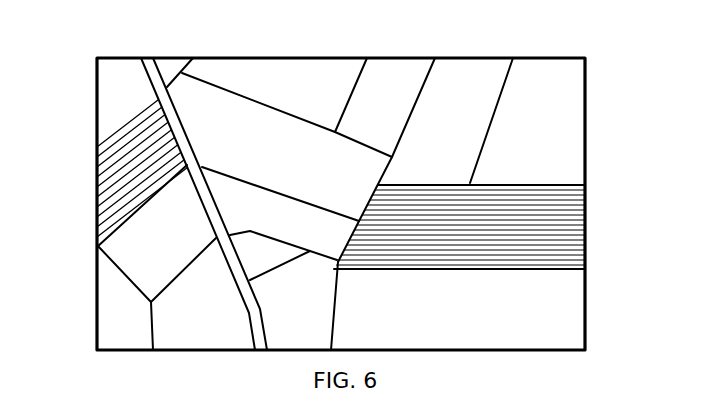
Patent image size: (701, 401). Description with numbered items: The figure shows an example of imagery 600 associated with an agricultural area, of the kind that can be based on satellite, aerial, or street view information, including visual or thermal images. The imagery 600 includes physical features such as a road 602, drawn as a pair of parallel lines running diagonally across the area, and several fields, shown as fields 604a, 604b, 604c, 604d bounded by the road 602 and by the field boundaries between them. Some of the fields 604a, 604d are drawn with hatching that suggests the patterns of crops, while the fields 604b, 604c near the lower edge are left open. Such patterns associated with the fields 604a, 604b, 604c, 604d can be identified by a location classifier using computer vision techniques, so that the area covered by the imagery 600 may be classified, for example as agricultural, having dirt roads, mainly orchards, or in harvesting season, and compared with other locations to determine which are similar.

The imagery 600 is at (80, 74).
The road 602 is at (144, 57).
The field 604a is at (118, 192).
The field 604b is at (228, 323).
The field 604c is at (527, 320).
The field 604d is at (562, 240).